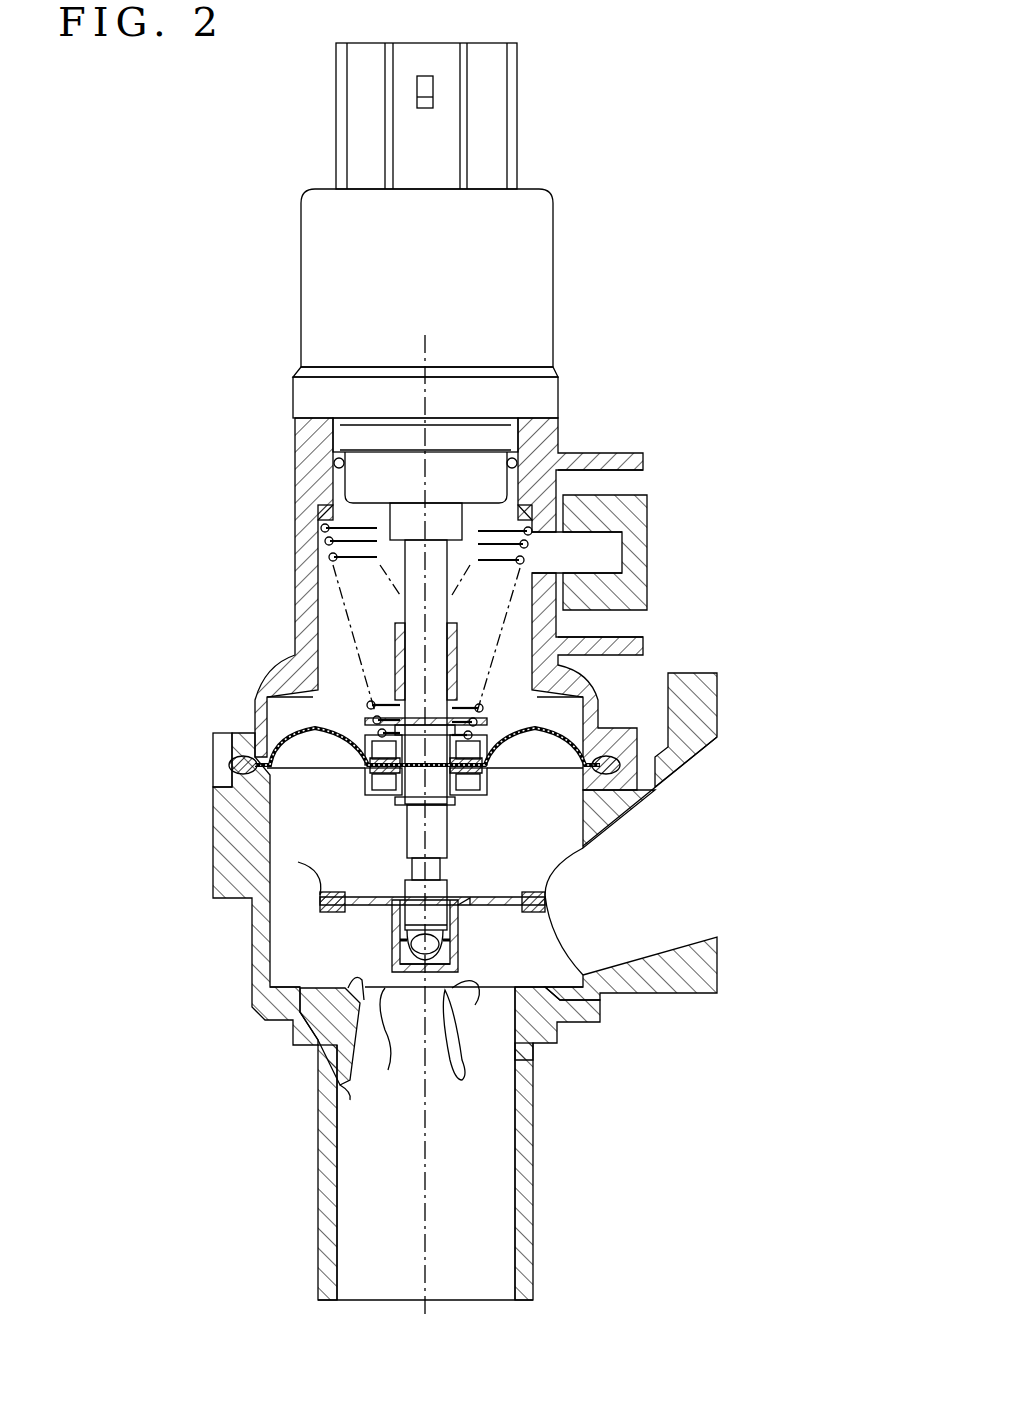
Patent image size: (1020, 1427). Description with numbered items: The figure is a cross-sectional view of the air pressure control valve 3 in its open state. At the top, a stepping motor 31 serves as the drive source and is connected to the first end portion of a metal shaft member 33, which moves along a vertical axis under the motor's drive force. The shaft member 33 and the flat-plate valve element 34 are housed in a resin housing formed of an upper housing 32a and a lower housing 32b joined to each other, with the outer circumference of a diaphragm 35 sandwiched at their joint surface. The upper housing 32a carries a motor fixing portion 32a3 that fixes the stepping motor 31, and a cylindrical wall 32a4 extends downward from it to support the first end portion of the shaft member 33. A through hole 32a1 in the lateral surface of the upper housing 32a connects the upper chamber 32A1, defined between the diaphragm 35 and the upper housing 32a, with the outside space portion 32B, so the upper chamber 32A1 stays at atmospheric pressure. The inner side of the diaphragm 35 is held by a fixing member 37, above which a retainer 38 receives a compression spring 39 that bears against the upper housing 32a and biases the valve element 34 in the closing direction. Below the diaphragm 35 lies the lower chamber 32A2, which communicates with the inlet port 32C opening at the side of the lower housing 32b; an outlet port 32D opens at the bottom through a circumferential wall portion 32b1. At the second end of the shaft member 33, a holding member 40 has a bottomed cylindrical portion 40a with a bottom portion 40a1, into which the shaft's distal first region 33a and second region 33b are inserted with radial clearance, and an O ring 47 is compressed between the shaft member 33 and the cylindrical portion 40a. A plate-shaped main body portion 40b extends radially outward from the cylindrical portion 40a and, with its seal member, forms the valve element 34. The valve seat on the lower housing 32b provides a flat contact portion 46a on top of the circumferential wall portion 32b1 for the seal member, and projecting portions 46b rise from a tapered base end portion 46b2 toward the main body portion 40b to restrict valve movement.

The air pressure control valve 3 is at (718, 190).
The stepping motor 31 is at (305, 242).
The upper housing 32a is at (300, 582).
The through hole 32a1 is at (615, 555).
The motor fixing portion 32a3 is at (300, 440).
The cylindrical wall 32a4 is at (312, 615).
The outside space portion 32B is at (570, 490).
The compression spring 39 is at (540, 555).
The retainer 38 is at (372, 715).
The shaft member 33 is at (447, 590).
The first region 33a is at (447, 990).
The second region 33b is at (437, 950).
The fixing member 37 is at (365, 735).
The diaphragm 35 is at (345, 755).
The upper chamber 32A1 is at (293, 712).
The lower chamber 32A2 is at (290, 840).
The lower housing 32b is at (215, 855).
The inlet port 32C is at (695, 862).
The circumferential wall portion 32b1 is at (318, 1170).
The outlet port 32D is at (490, 1225).
The valve element 34 is at (378, 887).
The main body portion 40b is at (492, 897).
The O ring 47 is at (432, 905).
The holding member 40 is at (430, 985).
The cylindrical portion 40a is at (457, 928).
The bottom portion 40a1 is at (425, 985).
The contact portion 46a is at (335, 987).
The projecting portion 46b is at (312, 1045).
The base end portion 46b2 is at (340, 1075).